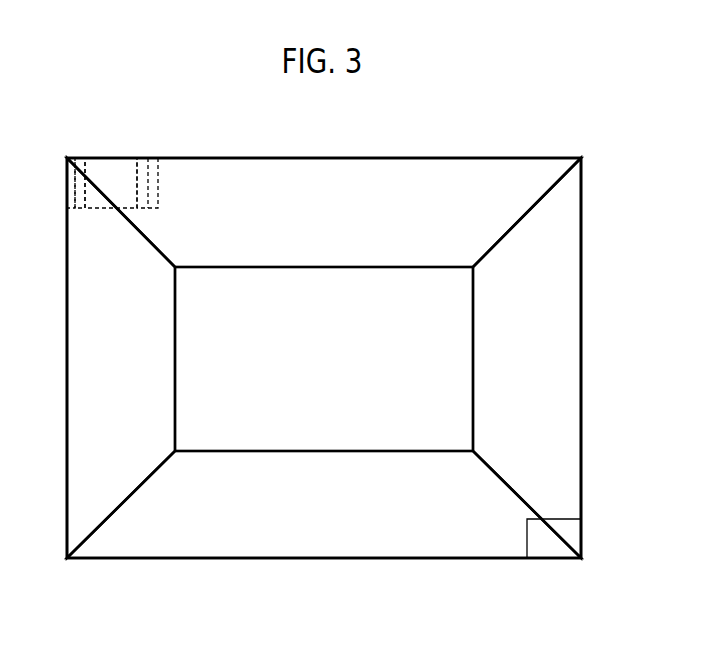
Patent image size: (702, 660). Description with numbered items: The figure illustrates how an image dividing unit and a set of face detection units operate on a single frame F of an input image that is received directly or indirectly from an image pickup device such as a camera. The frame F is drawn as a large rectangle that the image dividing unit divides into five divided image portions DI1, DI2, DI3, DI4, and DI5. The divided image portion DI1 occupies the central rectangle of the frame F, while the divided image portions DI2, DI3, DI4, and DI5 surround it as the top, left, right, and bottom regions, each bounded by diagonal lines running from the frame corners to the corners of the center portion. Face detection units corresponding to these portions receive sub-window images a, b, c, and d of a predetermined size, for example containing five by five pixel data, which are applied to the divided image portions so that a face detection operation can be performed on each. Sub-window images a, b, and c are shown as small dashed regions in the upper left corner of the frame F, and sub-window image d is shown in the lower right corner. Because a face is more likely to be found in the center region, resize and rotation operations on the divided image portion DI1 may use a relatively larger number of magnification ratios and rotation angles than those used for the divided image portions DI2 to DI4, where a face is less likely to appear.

The frame F is at (322, 158).
The divided image portion DI1 is at (324, 359).
The divided image portion DI2 is at (324, 212).
The divided image portion DI3 is at (121, 358).
The divided image portion DI4 is at (527, 358).
The divided image portion DI5 is at (324, 504).
The sub-window image a is at (71, 207).
The sub-window image b is at (84, 207).
The sub-window image c is at (122, 198).
The sub-window image d is at (550, 560).